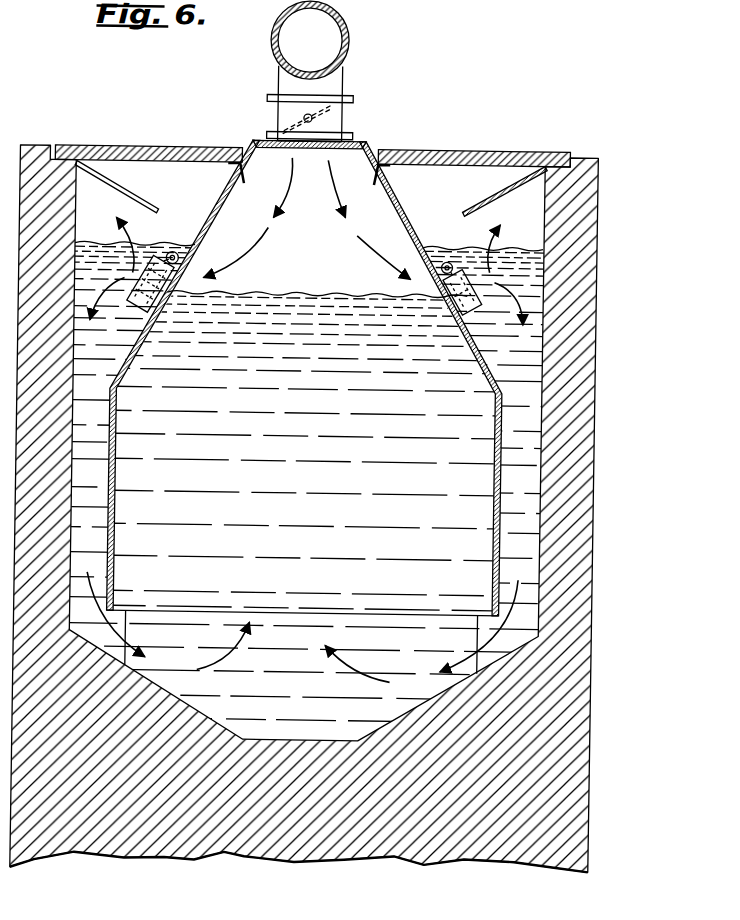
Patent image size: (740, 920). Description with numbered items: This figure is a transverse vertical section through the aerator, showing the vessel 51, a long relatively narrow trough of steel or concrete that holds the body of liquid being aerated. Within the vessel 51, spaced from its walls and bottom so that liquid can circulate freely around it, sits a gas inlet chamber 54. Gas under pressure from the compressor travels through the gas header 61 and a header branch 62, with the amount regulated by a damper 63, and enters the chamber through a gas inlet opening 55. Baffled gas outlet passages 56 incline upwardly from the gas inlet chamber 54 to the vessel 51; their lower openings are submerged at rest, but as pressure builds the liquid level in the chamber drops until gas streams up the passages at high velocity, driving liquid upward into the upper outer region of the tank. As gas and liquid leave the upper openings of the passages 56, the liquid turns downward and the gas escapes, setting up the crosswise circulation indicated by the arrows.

The vessel 51 is at (592, 222).
The gas inlet chamber 54 is at (396, 203).
The gas inlet opening 55 is at (307, 149).
The baffled gas outlet passage 56 is at (160, 253).
The gas header 61 is at (343, 39).
The header branch 62 is at (338, 80).
The damper 63 is at (299, 118).